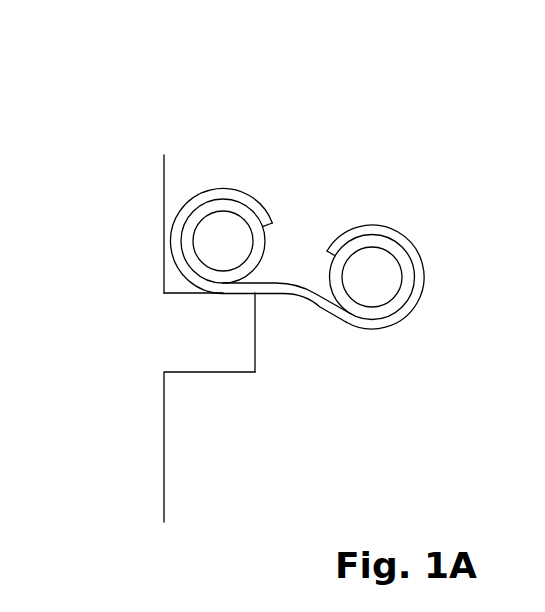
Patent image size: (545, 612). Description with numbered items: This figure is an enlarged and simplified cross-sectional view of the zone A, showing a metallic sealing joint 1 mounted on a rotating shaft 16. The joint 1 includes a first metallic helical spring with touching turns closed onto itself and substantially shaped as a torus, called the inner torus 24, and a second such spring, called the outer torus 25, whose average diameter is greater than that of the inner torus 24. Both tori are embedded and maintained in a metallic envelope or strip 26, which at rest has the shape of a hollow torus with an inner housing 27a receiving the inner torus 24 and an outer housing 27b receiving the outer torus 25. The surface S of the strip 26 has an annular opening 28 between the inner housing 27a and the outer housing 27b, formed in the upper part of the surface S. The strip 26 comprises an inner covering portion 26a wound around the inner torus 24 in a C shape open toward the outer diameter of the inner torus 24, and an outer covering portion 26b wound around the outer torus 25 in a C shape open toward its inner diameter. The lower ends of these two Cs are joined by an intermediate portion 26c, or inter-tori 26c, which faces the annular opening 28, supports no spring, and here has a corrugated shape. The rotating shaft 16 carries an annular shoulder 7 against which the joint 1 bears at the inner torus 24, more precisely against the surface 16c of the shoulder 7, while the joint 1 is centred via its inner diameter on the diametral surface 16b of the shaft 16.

The metallic sealing joint 1 is at (238, 158).
The annular shoulder 7 is at (253, 342).
The rotating shaft 16 is at (133, 470).
The diametral surface of the rotating shaft 16b is at (158, 184).
The surface of the shoulder 16c is at (204, 300).
The inner torus 24 is at (270, 243).
The outer torus 25 is at (330, 271).
The metallic strip 26 is at (394, 226).
The inner covering portion 26a is at (218, 187).
The outer covering portion 26b is at (422, 292).
The intermediate portion (inter-tori) 26c is at (287, 294).
The inner housing 27a is at (181, 249).
The outer housing 27b is at (373, 321).
The annular opening 28 is at (305, 243).
The zone A is at (150, 113).
The surface of the strip S is at (403, 237).